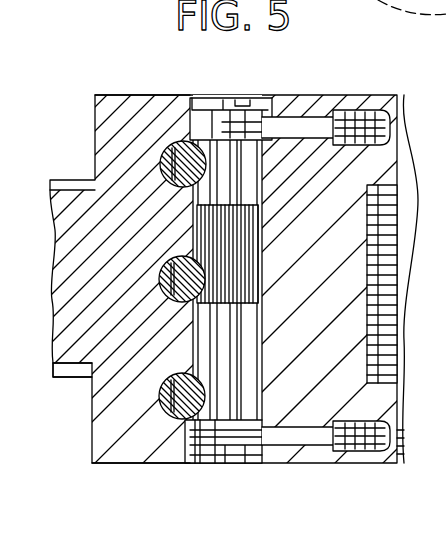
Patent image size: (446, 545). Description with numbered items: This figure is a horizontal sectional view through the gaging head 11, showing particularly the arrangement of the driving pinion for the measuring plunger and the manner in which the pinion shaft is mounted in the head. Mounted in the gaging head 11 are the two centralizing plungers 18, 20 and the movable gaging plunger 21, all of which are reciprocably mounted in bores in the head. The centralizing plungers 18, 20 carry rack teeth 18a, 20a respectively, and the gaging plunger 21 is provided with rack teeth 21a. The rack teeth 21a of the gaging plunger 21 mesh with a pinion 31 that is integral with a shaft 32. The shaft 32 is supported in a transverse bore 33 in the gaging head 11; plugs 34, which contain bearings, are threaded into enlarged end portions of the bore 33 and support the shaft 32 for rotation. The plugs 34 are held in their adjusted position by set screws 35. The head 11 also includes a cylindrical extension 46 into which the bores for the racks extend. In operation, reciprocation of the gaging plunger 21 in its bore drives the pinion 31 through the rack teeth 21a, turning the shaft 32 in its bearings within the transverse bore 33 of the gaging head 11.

The gaging head 11 is at (207, 474).
The centralizing plunger 18 is at (183, 140).
The rack teeth 18a is at (168, 165).
The centralizing plunger 20 is at (162, 452).
The rack teeth 20a is at (158, 400).
The gaging plunger 21 is at (178, 290).
The rack teeth 21a is at (258, 280).
The pinion 31 is at (240, 242).
The shaft 32 is at (233, 368).
The transverse bore 33 is at (262, 172).
The plugs 34 is at (250, 104).
The set screws 35 is at (343, 128).
The cylindrical extension 46 is at (55, 372).